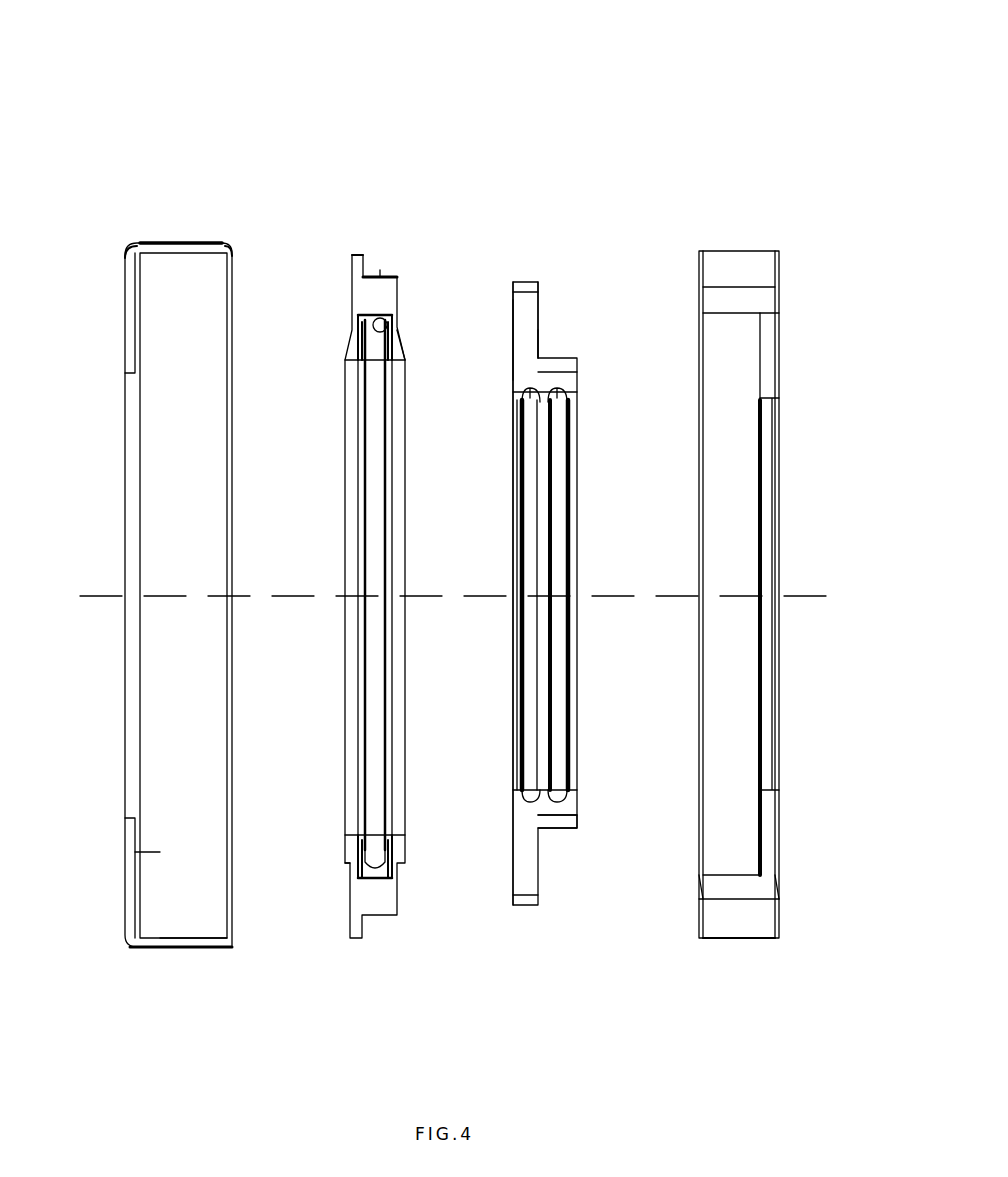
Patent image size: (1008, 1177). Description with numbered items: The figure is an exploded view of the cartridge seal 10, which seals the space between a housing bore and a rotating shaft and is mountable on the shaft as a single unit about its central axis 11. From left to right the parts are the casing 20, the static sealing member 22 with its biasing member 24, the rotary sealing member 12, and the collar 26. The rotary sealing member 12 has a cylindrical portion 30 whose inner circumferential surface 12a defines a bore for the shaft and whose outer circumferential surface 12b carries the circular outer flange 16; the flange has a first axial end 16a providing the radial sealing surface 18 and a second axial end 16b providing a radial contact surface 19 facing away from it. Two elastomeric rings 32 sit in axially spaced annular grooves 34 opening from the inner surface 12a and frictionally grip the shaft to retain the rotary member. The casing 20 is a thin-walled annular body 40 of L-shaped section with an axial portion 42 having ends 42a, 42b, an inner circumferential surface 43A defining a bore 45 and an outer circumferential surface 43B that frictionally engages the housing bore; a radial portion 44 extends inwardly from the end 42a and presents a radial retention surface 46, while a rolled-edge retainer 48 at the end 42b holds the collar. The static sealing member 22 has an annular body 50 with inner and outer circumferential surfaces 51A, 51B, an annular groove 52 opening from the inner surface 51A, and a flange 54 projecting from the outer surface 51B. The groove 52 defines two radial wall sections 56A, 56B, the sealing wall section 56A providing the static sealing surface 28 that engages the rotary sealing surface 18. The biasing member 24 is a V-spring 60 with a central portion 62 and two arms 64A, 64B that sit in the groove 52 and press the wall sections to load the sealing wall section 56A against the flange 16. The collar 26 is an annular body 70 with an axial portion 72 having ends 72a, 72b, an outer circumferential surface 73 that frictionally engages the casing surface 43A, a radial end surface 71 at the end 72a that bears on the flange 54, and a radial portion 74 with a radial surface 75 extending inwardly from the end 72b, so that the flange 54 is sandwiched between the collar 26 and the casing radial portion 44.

The cartridge seal 10 is at (288, 83).
The central axis 11 is at (822, 598).
The rotary sealing member 12 is at (538, 203).
The inner circumferential surface 12a is at (548, 765).
The outer circumferential surface 12b is at (560, 820).
The outer flange 16 is at (530, 312).
The first axial end 16a is at (513, 318).
The second axial end 16b is at (540, 326).
The radial sealing surface 18 is at (513, 346).
The radial contact surface 19 is at (540, 343).
The casing 20 is at (168, 188).
The static sealing member 22 is at (388, 193).
The biasing member 24 is at (413, 860).
The collar 26 is at (743, 193).
The static sealing surface 28 is at (405, 335).
The cylindrical portion 30 is at (582, 806).
The elastomeric rings 32 is at (530, 790).
The annular grooves 34 is at (528, 402).
The annular body 40 is at (115, 298).
The axial portion 42 is at (195, 243).
The first axial end 42a is at (124, 252).
The second axial end 42b is at (235, 252).
The inner circumferential surface 43A is at (172, 938).
The outer circumferential surface 43B is at (190, 955).
The radial portion 44 is at (130, 340).
The bore 45 is at (200, 323).
The radial retention surface 46 is at (135, 852).
The retainer 48 is at (230, 262).
The annular body 50 is at (400, 292).
The inner circumferential surface 51A is at (402, 390).
The outer circumferential surface 51B is at (380, 277).
The annular groove 52 is at (388, 327).
The flange 54 is at (356, 253).
The sealing wall section 56A is at (398, 360).
The radial wall section 56B is at (350, 360).
The V-spring 60 is at (345, 865).
The central portion 62 is at (375, 878).
The radial arm 64A is at (398, 850).
The radial arm 64B is at (360, 850).
The annular body 70 is at (785, 270).
The radial end surface 71 is at (700, 895).
The axial portion 72 is at (727, 300).
The first axial end 72a is at (703, 886).
The second axial end 72b is at (779, 885).
The outer circumferential surface 73 is at (740, 923).
The radial portion 74 is at (770, 340).
The radial surface 75 is at (762, 345).